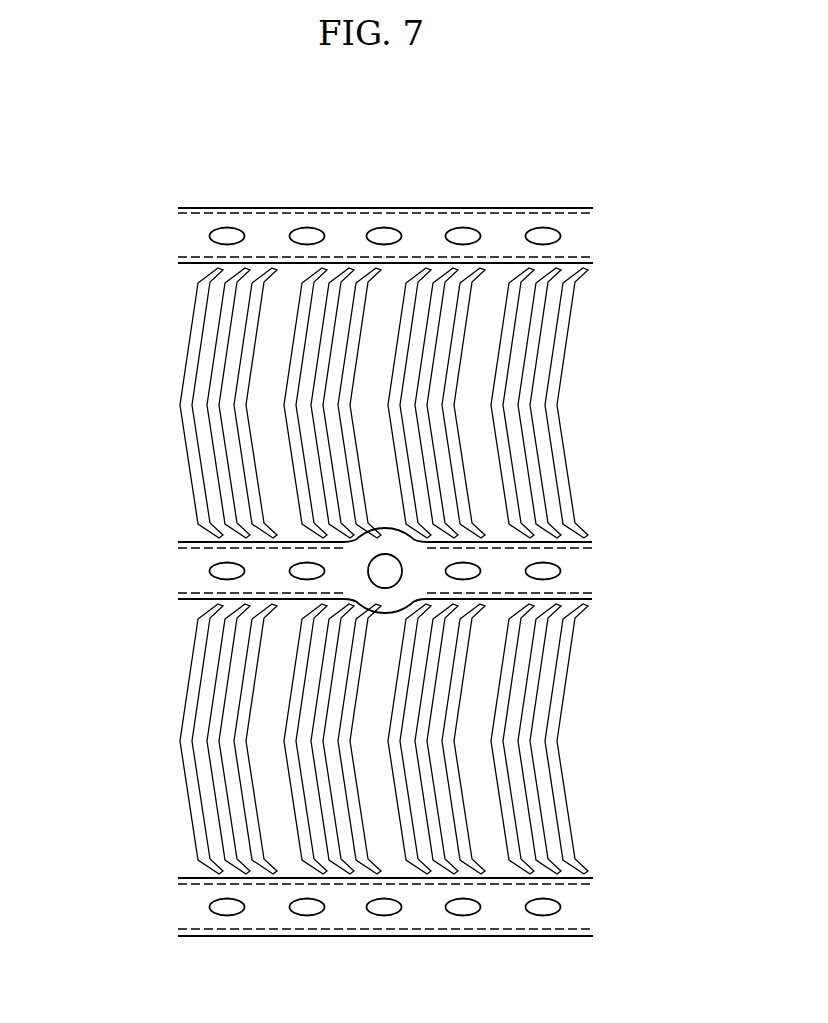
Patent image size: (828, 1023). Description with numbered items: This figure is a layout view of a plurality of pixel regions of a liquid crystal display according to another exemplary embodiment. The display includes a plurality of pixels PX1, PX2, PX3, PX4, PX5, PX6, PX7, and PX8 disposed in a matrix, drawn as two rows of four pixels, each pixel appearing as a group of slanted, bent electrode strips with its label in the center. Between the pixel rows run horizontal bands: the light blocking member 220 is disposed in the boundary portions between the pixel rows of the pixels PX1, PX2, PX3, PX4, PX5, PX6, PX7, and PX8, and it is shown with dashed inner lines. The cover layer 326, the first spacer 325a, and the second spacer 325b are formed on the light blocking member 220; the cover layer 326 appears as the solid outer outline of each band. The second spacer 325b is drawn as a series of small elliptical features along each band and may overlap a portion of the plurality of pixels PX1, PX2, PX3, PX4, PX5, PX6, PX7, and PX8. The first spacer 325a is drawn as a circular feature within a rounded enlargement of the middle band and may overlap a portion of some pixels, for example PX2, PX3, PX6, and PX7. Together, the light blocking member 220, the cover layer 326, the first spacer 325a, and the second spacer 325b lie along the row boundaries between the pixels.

The light blocking member 220 is at (580, 258).
The cover layer 326 is at (517, 207).
The first spacer 325a is at (385, 572).
The second spacer 325b is at (385, 236).
The pixel PX1 is at (228, 403).
The pixel PX2 is at (332, 403).
The pixel PX3 is at (436, 403).
The pixel PX4 is at (539, 403).
The pixel PX5 is at (228, 739).
The pixel PX6 is at (332, 739).
The pixel PX7 is at (436, 739).
The pixel PX8 is at (539, 739).